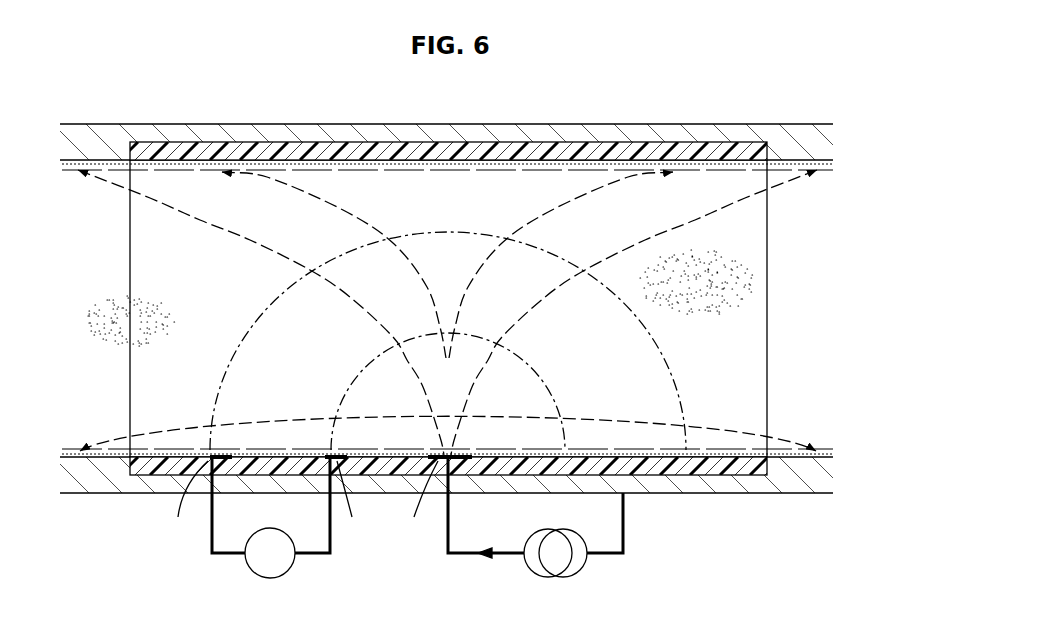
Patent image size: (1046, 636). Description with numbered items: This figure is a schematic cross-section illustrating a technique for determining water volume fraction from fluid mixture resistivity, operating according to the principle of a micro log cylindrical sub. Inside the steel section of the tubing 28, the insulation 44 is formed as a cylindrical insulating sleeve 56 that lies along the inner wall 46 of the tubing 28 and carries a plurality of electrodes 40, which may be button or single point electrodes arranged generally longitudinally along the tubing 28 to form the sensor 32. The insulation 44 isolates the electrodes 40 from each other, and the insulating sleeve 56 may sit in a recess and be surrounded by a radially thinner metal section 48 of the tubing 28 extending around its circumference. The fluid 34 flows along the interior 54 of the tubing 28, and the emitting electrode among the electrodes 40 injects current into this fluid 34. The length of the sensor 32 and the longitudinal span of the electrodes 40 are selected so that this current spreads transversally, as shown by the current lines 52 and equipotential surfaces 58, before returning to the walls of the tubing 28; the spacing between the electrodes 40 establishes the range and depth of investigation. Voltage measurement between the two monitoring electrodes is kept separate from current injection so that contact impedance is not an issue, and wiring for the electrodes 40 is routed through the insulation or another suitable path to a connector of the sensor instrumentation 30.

The tubing 28 is at (184, 123).
The cylindrical insulating sleeve 56 is at (431, 136).
The insulation 44 is at (633, 143).
The metal section 48 is at (357, 149).
The inner wall 46 is at (785, 161).
The interior 54 is at (493, 192).
The sensor 32 is at (194, 443).
The electrodes 40 is at (424, 452).
The sensor instrumentation 30 is at (649, 533).
The current lines 52 is at (343, 211).
The equipotential surfaces 58 is at (634, 324).
The fluid 34 is at (685, 295).